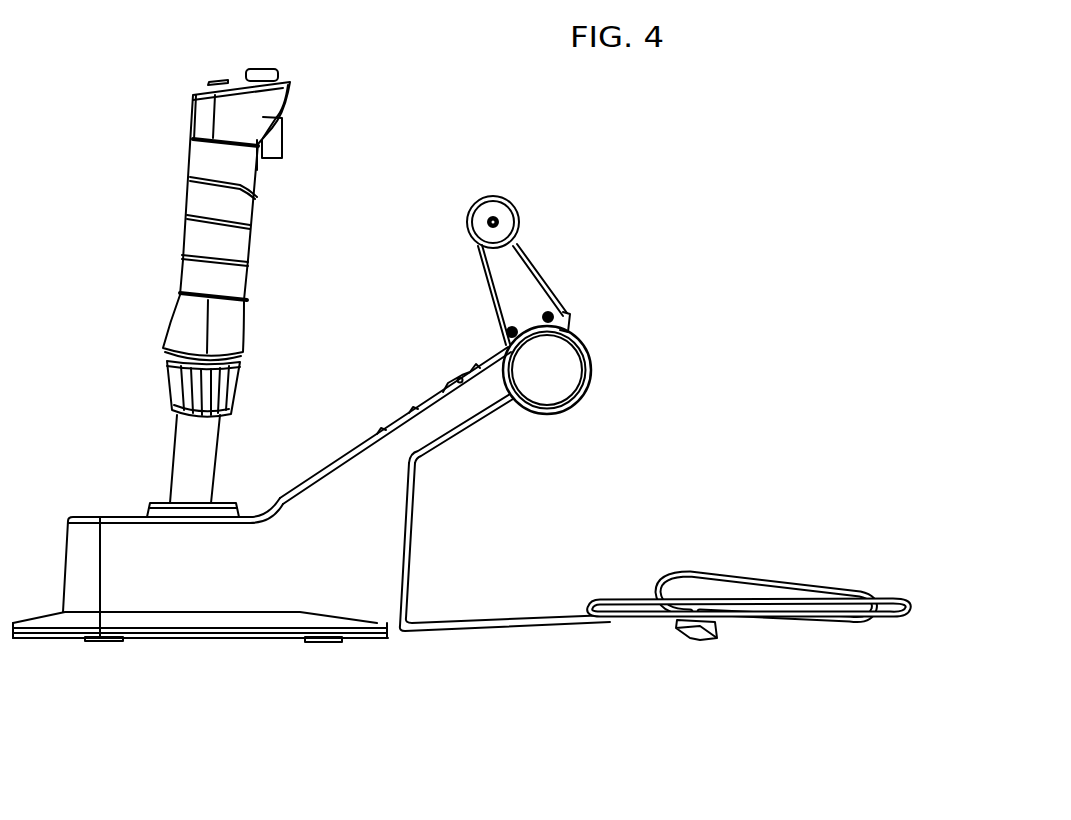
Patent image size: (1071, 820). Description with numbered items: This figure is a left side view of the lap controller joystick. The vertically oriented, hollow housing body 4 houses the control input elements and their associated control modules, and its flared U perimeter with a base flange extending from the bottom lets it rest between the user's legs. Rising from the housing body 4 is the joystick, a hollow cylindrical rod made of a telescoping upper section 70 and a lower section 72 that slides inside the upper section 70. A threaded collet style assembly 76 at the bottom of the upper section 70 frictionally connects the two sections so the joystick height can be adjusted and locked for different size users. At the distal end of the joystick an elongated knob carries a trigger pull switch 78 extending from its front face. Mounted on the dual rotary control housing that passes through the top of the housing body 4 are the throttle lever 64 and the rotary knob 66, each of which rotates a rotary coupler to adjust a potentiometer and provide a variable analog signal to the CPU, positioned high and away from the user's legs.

The housing body 4 is at (235, 581).
The throttle lever 64 is at (523, 273).
The rotary knob 66 is at (565, 363).
The upper section 70 is at (188, 230).
The lower section 72 is at (213, 439).
The threaded collet style assembly 76 is at (242, 383).
The trigger pull switch 78 is at (277, 132).